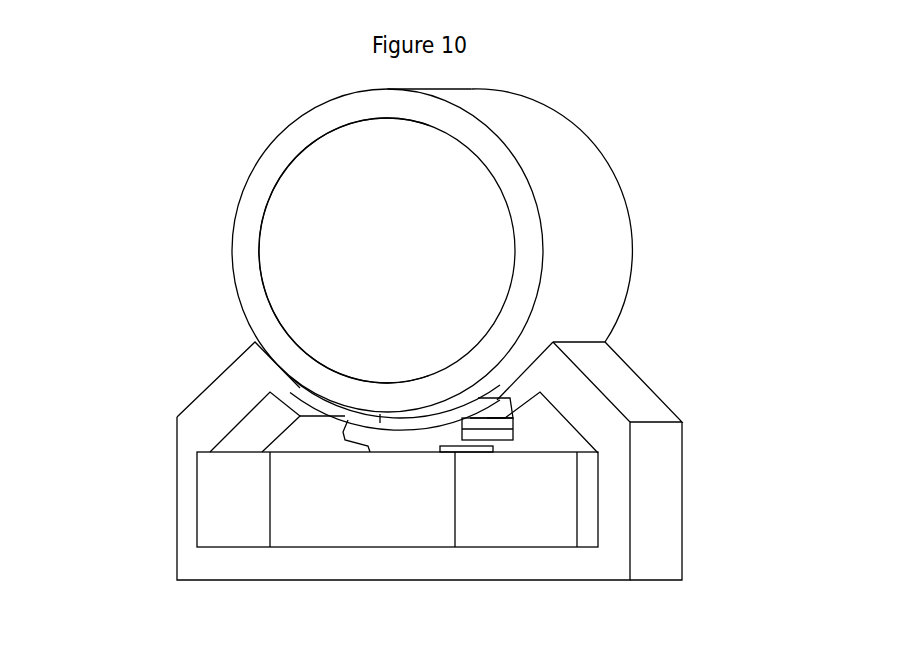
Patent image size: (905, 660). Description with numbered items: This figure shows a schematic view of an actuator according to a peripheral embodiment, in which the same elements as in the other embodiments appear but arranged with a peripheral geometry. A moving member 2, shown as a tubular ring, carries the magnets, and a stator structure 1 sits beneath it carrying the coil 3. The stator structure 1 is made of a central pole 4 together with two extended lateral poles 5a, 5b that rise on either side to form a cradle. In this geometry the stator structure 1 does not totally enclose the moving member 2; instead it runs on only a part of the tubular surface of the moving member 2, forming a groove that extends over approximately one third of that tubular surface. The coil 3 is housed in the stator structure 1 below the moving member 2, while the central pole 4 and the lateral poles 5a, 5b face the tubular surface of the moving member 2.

The stator structure 1 is at (687, 483).
The moving member 2 is at (637, 217).
The coil 3 is at (547, 520).
The central pole 4 is at (396, 443).
The extended lateral pole 5a is at (193, 426).
The extended lateral pole 5b is at (647, 432).